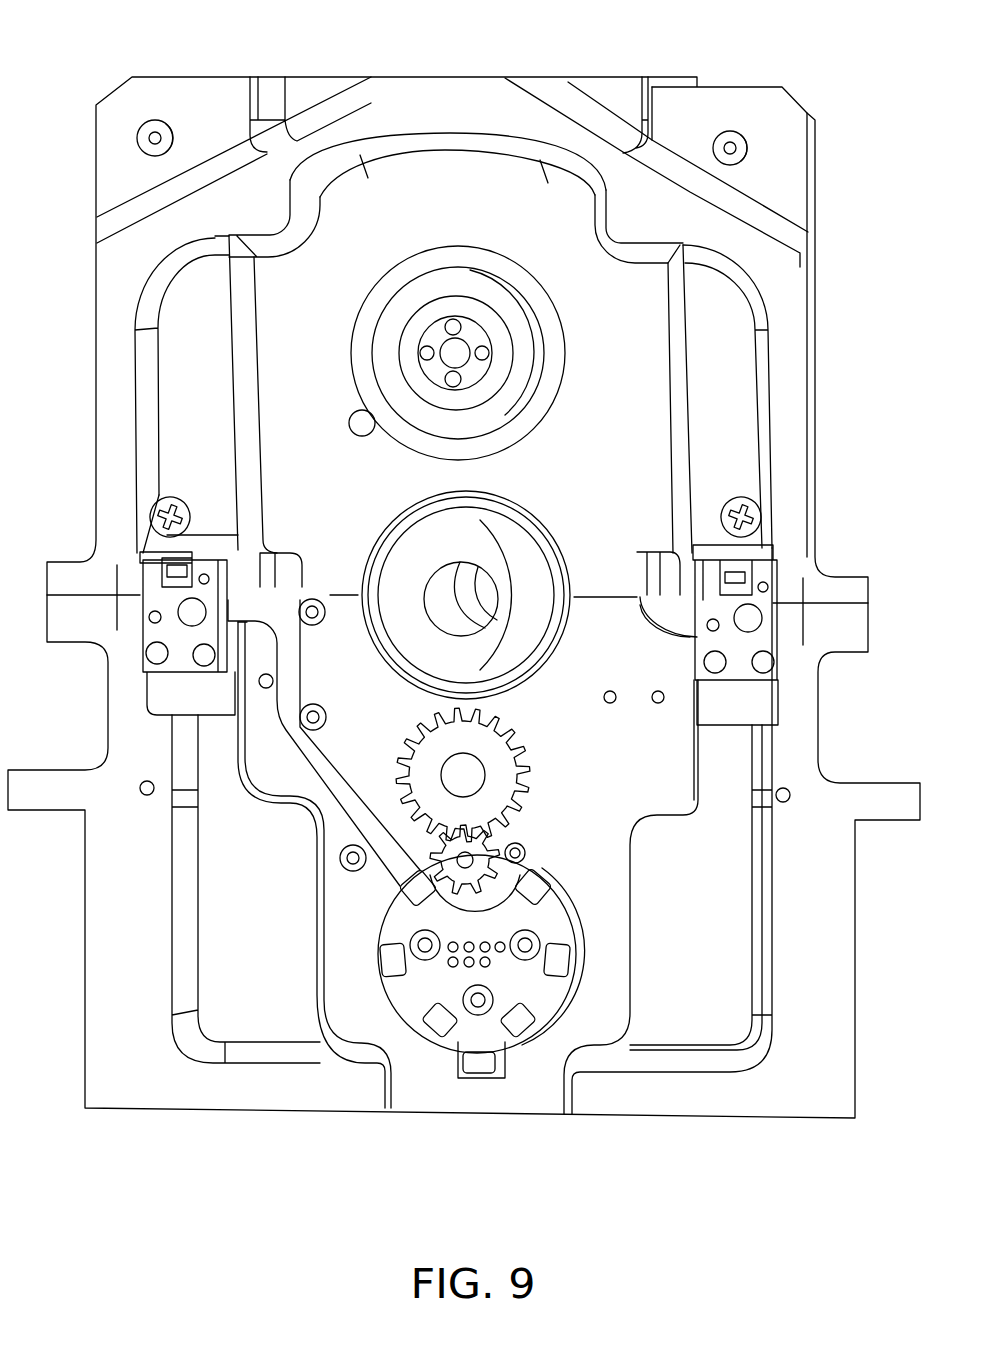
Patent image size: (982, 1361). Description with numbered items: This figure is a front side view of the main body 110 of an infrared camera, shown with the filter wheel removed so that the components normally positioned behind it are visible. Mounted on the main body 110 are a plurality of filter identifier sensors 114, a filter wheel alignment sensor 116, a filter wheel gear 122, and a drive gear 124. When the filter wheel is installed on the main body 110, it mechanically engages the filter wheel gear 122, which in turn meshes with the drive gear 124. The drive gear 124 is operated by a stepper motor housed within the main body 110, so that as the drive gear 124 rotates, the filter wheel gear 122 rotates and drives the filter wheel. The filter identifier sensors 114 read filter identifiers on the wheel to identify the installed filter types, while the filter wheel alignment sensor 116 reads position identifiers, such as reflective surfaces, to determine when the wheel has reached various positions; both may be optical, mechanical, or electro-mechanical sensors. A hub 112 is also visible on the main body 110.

The main body 110 is at (203, 110).
The drive hub 112 is at (490, 570).
The filter identifier sensors 114 is at (440, 1017).
The filter wheel alignment sensor 116 is at (486, 1066).
The filter wheel gear 122 is at (495, 758).
The drive gear 124 is at (508, 842).